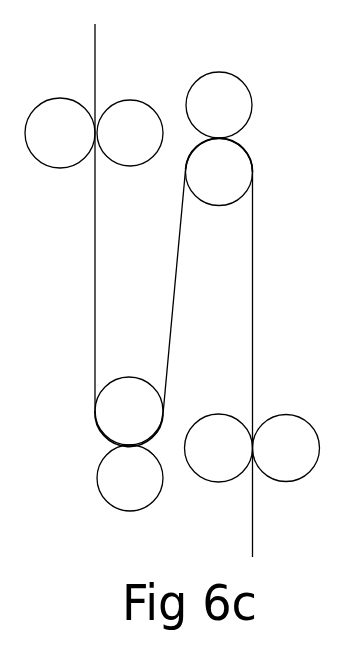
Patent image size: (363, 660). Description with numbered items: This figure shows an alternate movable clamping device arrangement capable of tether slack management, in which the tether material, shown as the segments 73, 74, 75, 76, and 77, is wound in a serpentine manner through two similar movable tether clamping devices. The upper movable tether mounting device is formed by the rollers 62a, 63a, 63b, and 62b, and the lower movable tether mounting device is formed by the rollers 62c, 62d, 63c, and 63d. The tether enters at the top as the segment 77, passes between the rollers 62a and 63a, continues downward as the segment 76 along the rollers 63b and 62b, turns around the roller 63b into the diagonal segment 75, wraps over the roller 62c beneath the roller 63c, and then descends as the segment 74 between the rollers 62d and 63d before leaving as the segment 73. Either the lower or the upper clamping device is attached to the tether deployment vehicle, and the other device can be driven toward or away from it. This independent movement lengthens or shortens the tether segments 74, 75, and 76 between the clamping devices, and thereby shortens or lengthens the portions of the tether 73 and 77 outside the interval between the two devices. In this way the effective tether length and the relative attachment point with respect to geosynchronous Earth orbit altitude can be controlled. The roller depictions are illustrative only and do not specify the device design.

The upper movable tether mounting device roller 62a is at (50, 102).
The upper movable tether mounting device roller 63a is at (118, 100).
The upper movable tether mounting device roller 62b is at (122, 510).
The upper movable tether mounting device roller 63b is at (130, 377).
The lower movable tether mounting device roller 62c is at (225, 205).
The lower movable tether mounting device roller 63c is at (245, 85).
The lower movable tether mounting device roller 62d is at (210, 483).
The lower movable tether mounting device roller 63d is at (280, 417).
The tether material 73 is at (253, 508).
The tether segment 74 is at (253, 342).
The tether segment 75 is at (173, 320).
The tether segment 76 is at (95, 308).
The tether material 77 is at (95, 72).